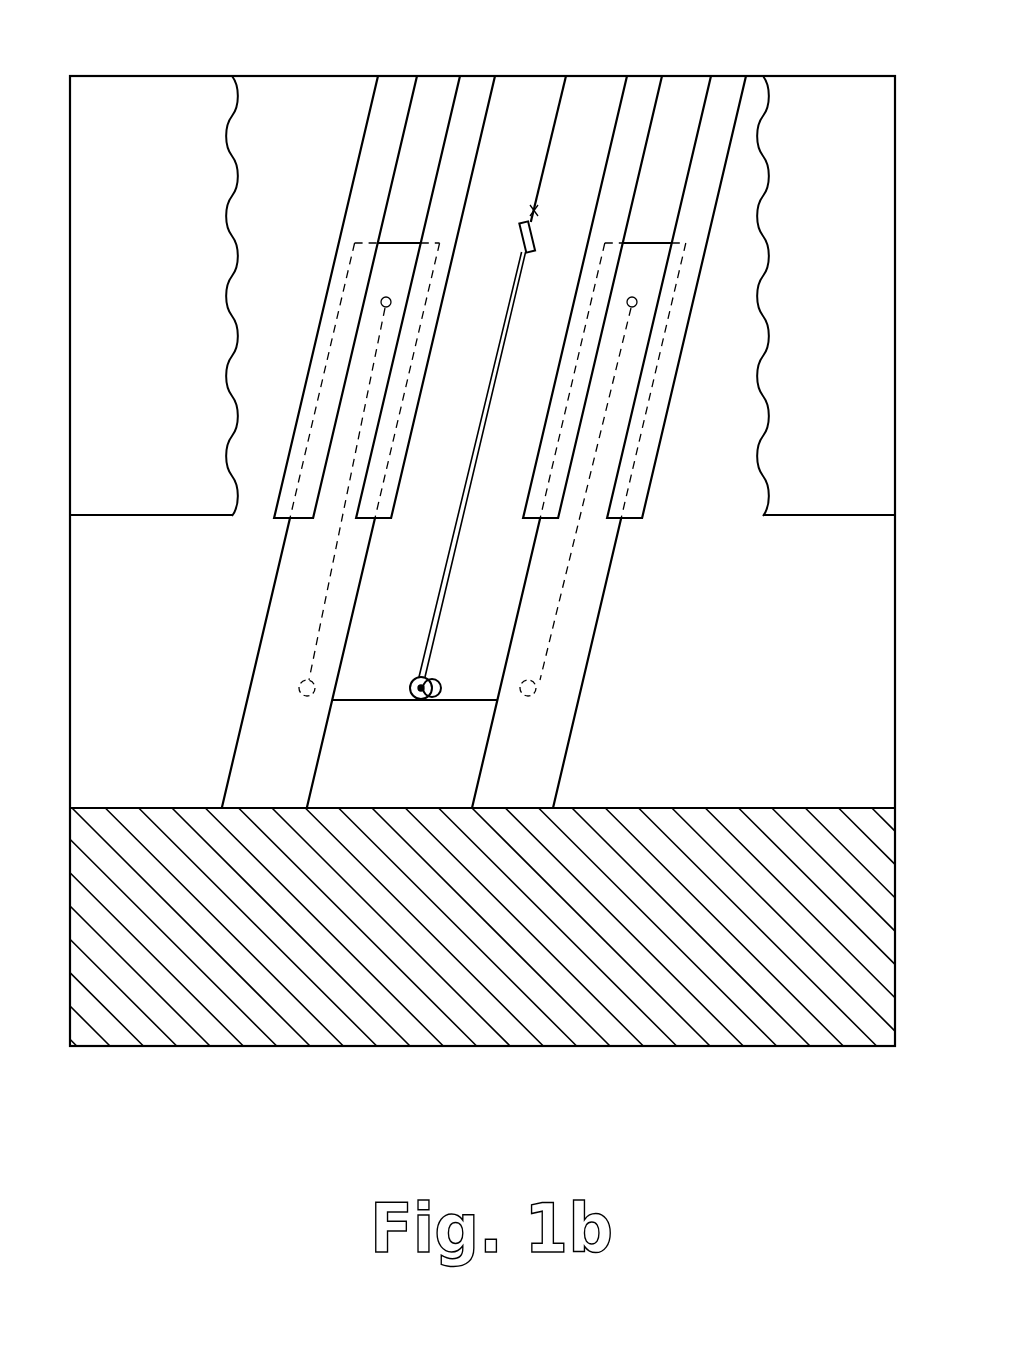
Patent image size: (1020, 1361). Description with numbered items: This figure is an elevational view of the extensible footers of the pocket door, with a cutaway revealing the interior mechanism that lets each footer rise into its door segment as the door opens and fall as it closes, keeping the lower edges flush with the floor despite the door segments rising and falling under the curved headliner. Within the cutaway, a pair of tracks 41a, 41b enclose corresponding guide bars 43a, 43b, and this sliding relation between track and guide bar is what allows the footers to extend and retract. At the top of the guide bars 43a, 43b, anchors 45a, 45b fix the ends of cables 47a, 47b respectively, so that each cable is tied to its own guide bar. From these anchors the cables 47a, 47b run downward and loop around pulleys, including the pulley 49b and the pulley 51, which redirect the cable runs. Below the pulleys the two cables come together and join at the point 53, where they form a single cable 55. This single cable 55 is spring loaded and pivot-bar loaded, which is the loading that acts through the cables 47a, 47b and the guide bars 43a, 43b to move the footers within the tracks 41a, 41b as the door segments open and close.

The track 41a is at (650, 80).
The track 41b is at (402, 80).
The guide bar 43a is at (536, 694).
The guide bar 43b is at (288, 783).
The anchor 45a is at (638, 302).
The anchor 45b is at (380, 302).
The cable 47a is at (458, 703).
The cable 47b is at (370, 698).
The pulley 49b is at (299, 690).
The pulley 51 is at (418, 702).
The cable join 53 is at (523, 235).
The single cable 55 is at (548, 160).